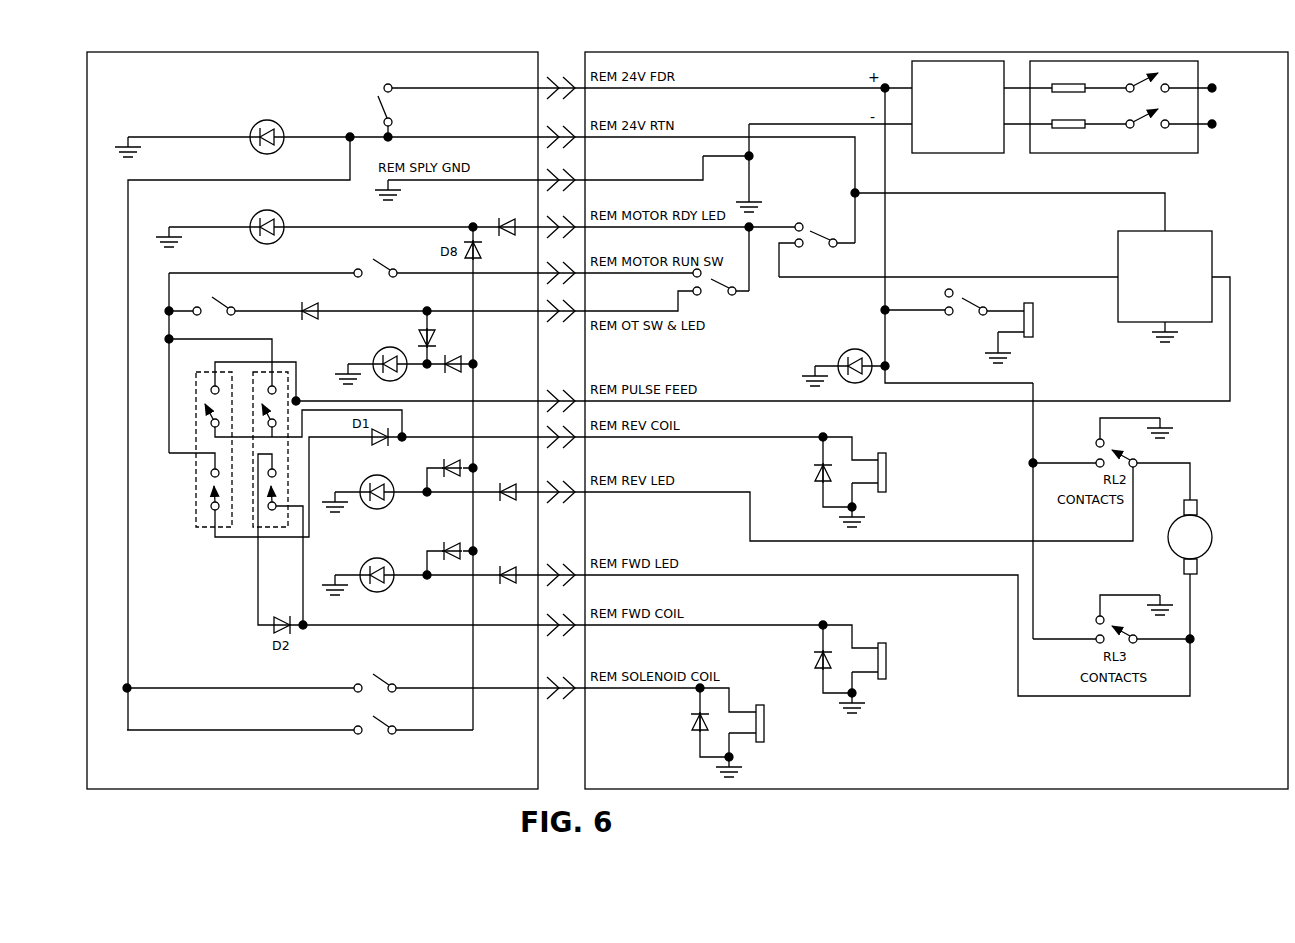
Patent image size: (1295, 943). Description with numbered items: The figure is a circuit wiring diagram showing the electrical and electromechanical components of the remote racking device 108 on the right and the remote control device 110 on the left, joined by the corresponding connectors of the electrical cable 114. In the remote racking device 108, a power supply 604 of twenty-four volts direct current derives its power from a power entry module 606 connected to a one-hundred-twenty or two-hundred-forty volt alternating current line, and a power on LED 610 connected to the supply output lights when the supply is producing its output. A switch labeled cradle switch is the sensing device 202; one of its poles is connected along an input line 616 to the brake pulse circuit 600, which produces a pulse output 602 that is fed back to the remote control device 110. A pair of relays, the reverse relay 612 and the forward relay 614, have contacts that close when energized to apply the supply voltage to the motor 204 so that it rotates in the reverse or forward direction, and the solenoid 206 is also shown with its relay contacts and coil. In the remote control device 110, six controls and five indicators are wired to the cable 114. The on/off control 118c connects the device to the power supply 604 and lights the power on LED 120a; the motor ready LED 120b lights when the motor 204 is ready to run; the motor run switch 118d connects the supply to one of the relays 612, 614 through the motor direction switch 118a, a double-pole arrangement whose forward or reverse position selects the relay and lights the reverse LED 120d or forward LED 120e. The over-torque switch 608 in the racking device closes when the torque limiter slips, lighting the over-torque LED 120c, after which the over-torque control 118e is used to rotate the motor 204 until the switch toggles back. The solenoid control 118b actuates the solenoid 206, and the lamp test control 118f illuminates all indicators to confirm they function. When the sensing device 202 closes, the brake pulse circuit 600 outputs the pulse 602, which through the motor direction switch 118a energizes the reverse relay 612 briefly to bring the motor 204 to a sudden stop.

The remote racking device 108 is at (1225, 790).
The remote control device 110 is at (150, 790).
The electrical cable 114 is at (568, 60).
The switch assembly (motor direction switch) 118a is at (240, 537).
The solenoid control 118b is at (372, 678).
The control (on/off switch) 118c is at (375, 105).
The motor run switch 118d is at (375, 265).
The over-torque control 118e is at (212, 304).
The lamp test control 118f is at (372, 720).
The power on LED 120a is at (285, 128).
The motor ready LED 120b is at (284, 220).
The over-torque LED 120c is at (376, 356).
The reverse LED 120d is at (362, 485).
The forward LED 120e is at (362, 568).
The sensing device (cradle switch) 202 is at (815, 231).
The motor 204 is at (1208, 526).
The solenoid 206 is at (986, 295).
The brake pulse circuit 600 is at (1212, 238).
The output signal (pulse output) 602 is at (1232, 377).
The power supply 604 is at (912, 70).
The power entry module 606 is at (1028, 72).
The over-torque switch 608 is at (714, 285).
The power on LED 610 is at (862, 382).
The reverse relay (RL2) 612 is at (930, 499).
The forward relay (RL3) 614 is at (912, 689).
The input line 616 is at (905, 277).